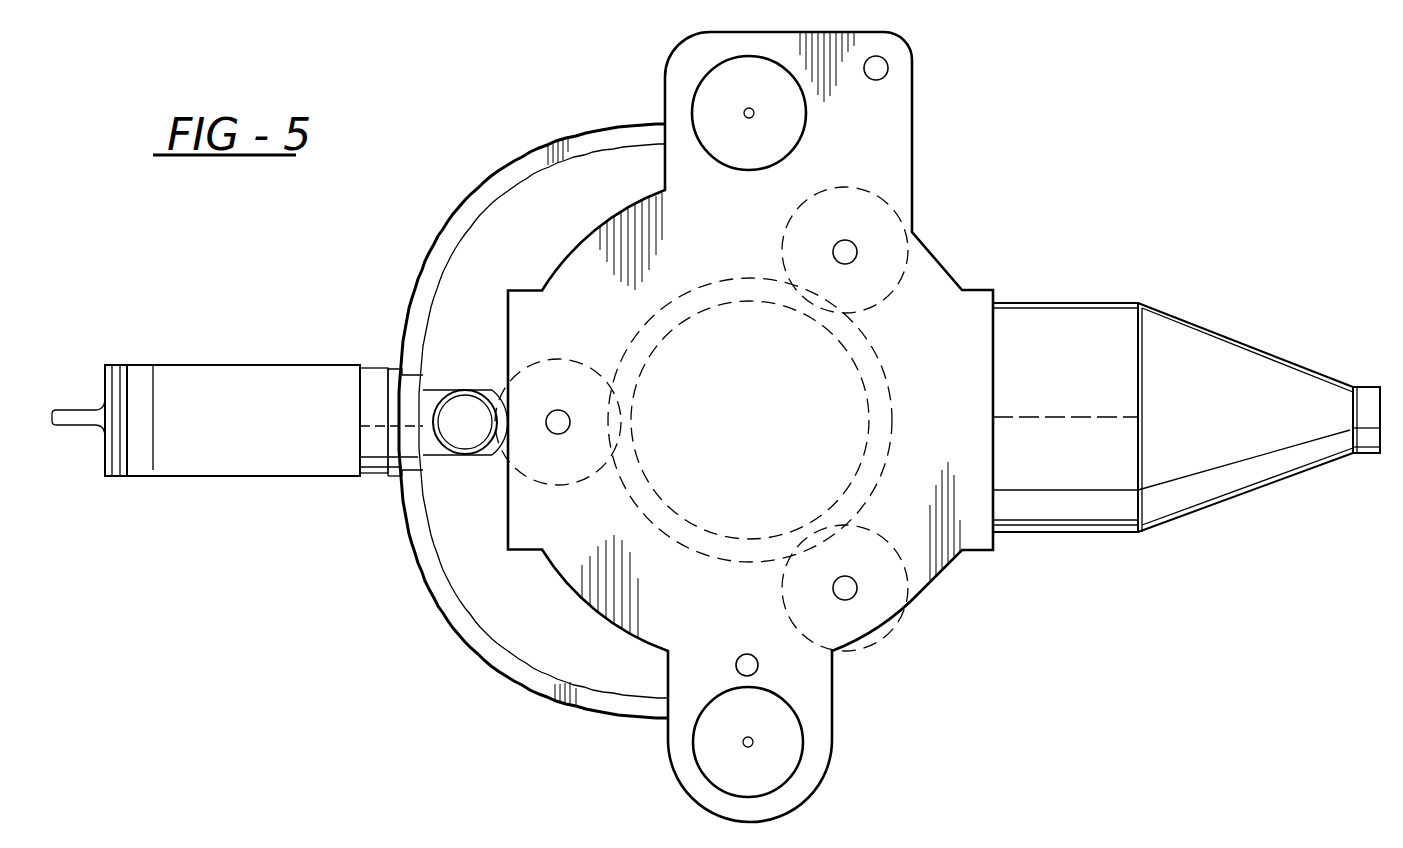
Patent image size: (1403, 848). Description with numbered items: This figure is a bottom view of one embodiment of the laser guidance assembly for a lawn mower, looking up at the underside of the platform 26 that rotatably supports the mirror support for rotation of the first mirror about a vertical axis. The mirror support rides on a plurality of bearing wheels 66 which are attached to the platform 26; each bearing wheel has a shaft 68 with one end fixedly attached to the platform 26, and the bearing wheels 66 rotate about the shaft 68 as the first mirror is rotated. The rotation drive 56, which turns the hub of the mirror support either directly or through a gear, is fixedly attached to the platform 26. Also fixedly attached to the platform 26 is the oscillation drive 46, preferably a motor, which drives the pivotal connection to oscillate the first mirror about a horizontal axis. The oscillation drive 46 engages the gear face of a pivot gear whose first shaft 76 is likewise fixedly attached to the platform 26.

The platform 26 is at (985, 338).
The oscillation drive 46 is at (703, 105).
The rotation drive 56 is at (790, 742).
The bearing wheels 66 is at (893, 270).
The shaft 68 is at (848, 242).
The first shaft 76 is at (888, 74).